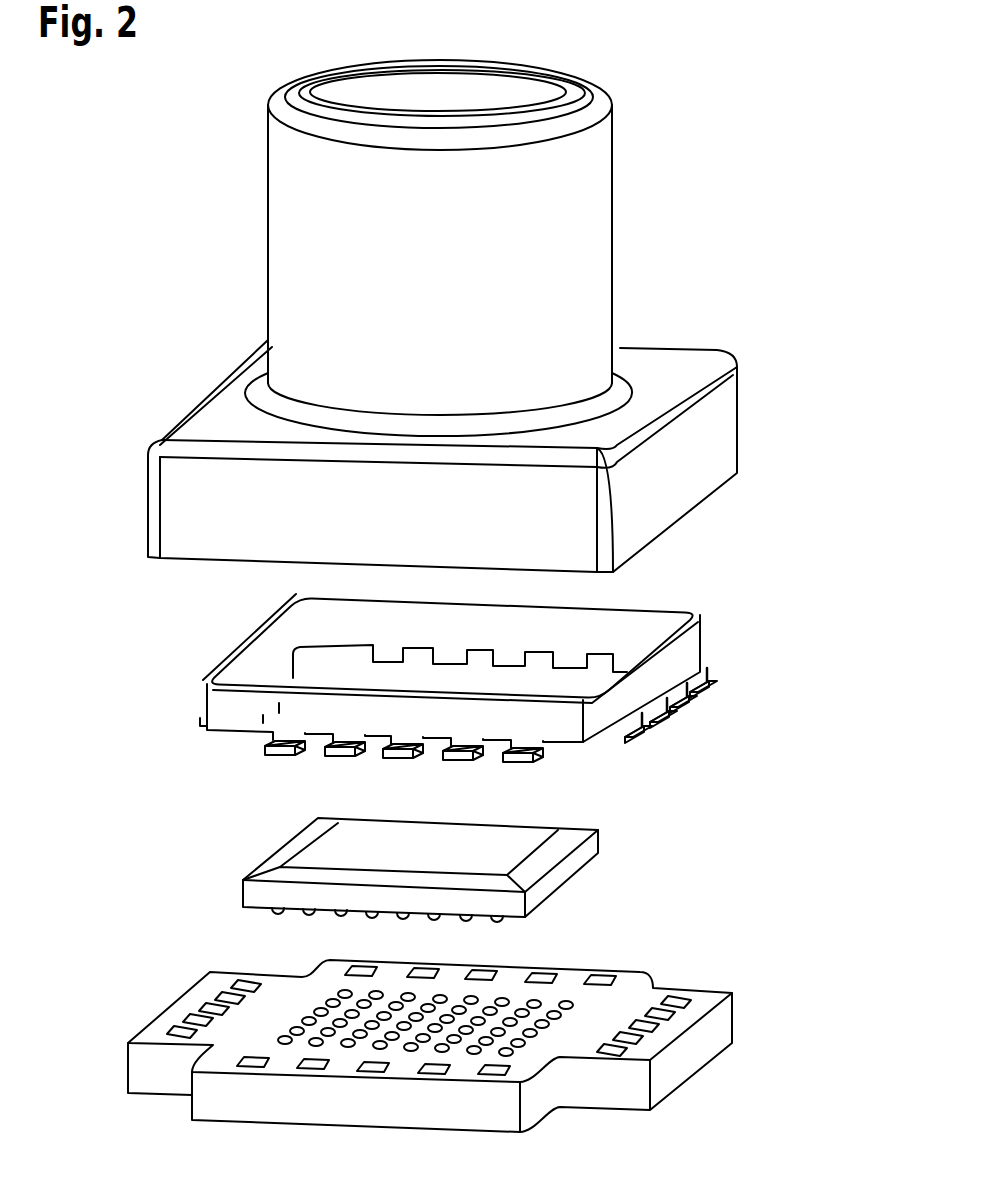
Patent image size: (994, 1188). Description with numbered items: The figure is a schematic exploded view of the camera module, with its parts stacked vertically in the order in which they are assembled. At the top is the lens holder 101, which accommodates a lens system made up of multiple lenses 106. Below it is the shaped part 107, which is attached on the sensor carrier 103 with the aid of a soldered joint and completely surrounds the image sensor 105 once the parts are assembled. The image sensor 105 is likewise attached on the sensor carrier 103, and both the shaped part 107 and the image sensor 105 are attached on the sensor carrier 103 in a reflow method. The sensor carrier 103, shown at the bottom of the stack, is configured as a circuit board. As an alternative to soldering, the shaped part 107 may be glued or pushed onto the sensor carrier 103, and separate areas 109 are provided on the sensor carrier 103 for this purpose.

The lens holder 101 is at (303, 223).
The lenses 106 is at (515, 92).
The shaped part 107 is at (683, 653).
The image sensor 105 is at (507, 855).
The sensor carrier 103 is at (432, 1018).
The separate areas 109 is at (210, 1008).